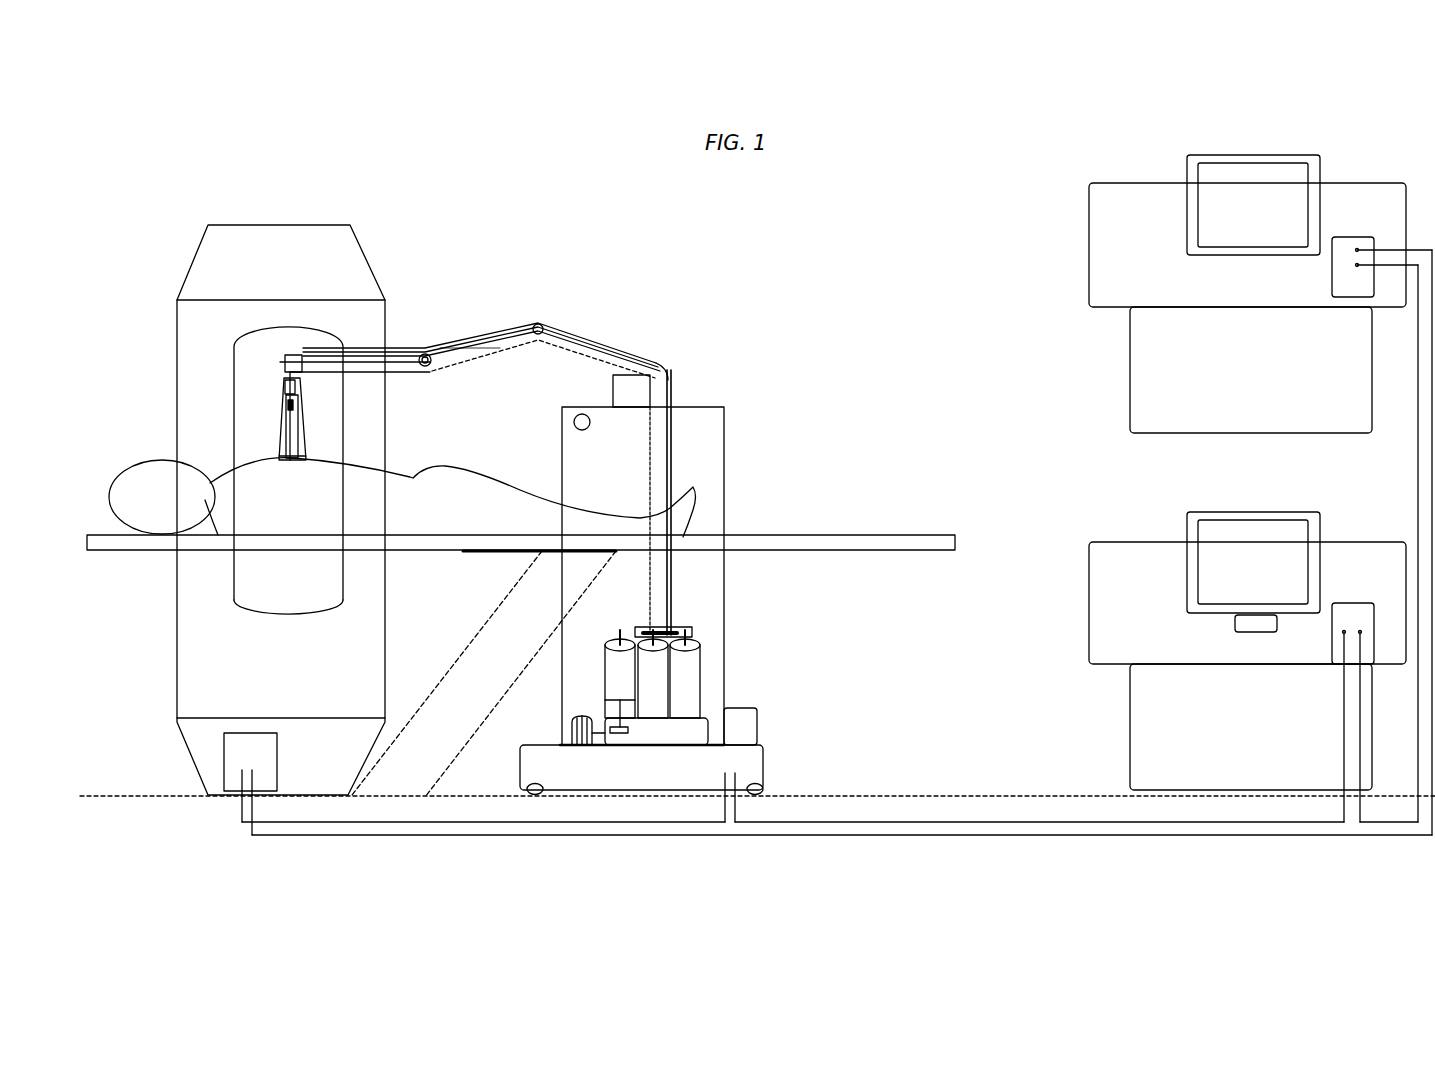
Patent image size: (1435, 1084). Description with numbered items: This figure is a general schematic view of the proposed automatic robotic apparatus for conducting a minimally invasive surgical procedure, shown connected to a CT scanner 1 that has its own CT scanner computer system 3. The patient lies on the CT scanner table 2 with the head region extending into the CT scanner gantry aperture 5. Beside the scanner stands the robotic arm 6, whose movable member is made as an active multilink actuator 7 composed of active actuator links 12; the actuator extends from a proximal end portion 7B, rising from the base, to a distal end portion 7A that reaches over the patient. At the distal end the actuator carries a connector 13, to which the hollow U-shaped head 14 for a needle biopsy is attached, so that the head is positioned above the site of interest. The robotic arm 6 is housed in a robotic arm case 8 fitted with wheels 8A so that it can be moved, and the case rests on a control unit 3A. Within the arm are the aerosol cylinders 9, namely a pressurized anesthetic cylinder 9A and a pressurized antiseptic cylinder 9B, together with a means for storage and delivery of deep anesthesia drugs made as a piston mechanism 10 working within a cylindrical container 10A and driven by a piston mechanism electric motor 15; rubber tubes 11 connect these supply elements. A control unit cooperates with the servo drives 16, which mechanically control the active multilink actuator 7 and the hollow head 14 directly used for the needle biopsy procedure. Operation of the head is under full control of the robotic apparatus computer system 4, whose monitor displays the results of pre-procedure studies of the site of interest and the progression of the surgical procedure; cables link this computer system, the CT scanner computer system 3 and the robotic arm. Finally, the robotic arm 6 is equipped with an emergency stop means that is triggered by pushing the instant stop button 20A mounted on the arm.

The CT scanner 1 is at (205, 686).
The CT scanner table 2 is at (858, 540).
The CT scanner computer system 3 is at (1292, 192).
The control unit 3A is at (742, 758).
The robotic apparatus computer system 4 is at (1213, 541).
The CT scanner gantry aperture 5 is at (252, 403).
The robotic arm 6 is at (700, 453).
The active multilink actuator 7 is at (565, 332).
The distal end portion 7A is at (297, 355).
The proximal end portion 7B is at (672, 605).
The robotic arm case 8 is at (723, 632).
The wheels 8A is at (763, 788).
The aerosol cylinders 9 is at (617, 763).
The pressurized anesthetic cylinder 9A is at (648, 677).
The pressurized antiseptic cylinder 9B is at (680, 682).
The piston mechanism 10 is at (613, 678).
The cylindrical container 10A is at (610, 663).
The rubber tubes 11 is at (650, 633).
The active actuator links 12 is at (468, 338).
The connector 13 is at (288, 382).
The hollow head 14 is at (290, 430).
The piston mechanism electric motor 15 is at (582, 745).
The servo drives 16 is at (630, 353).
The instant stop button 20A is at (576, 416).